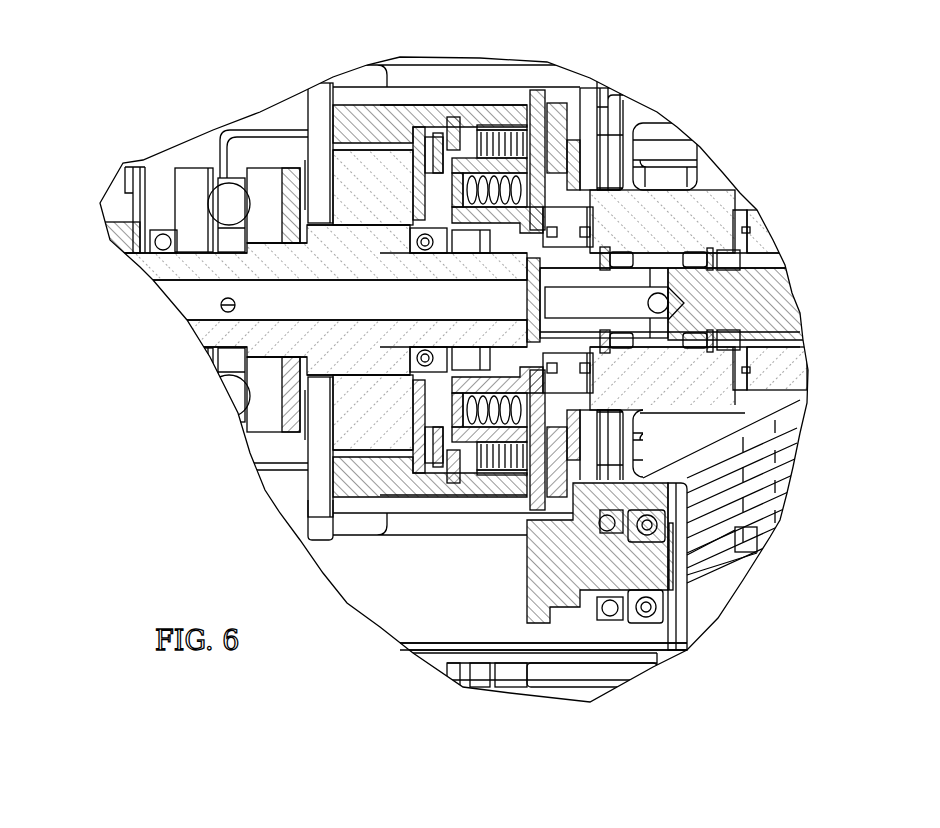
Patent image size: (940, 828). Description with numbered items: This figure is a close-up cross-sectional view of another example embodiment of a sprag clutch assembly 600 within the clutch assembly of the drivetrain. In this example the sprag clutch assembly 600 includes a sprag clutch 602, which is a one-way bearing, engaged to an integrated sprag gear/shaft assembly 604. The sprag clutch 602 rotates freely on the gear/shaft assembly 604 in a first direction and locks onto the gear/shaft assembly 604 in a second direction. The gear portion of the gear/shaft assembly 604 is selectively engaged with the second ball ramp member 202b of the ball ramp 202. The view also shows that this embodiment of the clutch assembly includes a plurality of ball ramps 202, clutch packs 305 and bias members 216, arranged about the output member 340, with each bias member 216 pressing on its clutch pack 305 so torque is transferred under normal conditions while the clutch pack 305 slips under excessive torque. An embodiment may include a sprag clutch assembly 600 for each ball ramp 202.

The ball ramp 202 is at (524, 97).
The second ball ramp member 202b is at (557, 568).
The bias member 216 is at (490, 212).
The clutch pack 305 is at (488, 128).
The output member 340 is at (730, 312).
The sprag clutch assembly 600 is at (705, 613).
The sprag clutch 602 is at (660, 622).
The gear/shaft assembly 604 is at (495, 643).